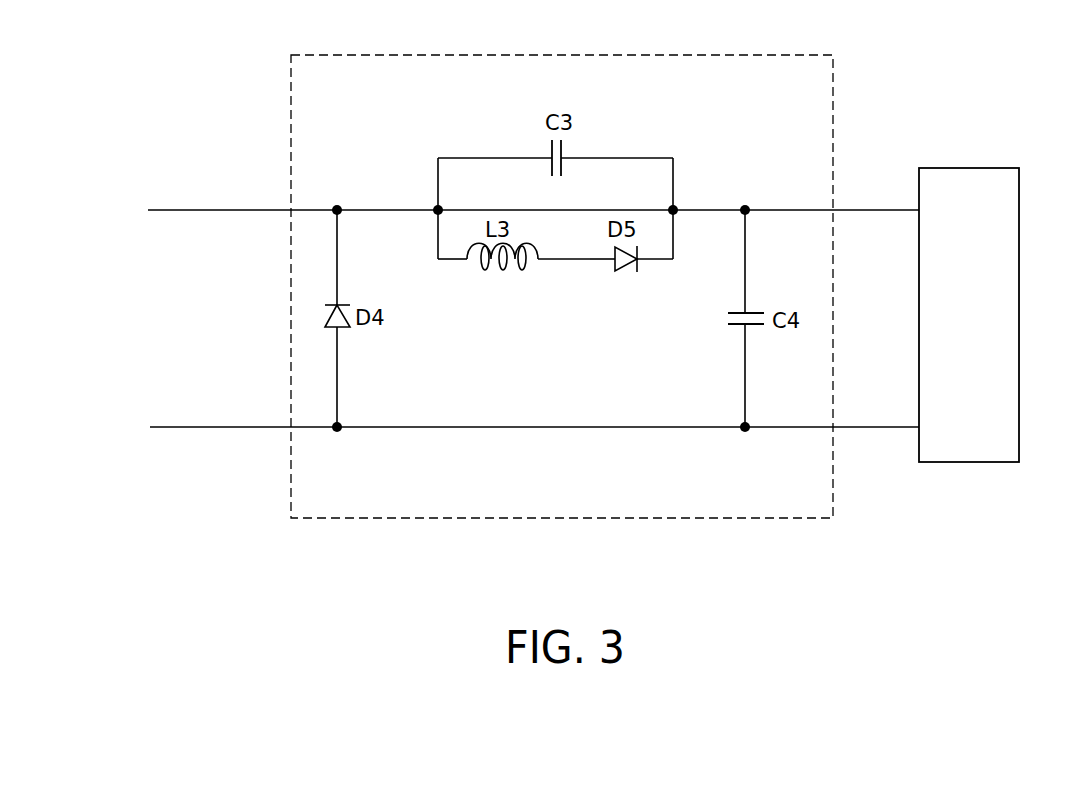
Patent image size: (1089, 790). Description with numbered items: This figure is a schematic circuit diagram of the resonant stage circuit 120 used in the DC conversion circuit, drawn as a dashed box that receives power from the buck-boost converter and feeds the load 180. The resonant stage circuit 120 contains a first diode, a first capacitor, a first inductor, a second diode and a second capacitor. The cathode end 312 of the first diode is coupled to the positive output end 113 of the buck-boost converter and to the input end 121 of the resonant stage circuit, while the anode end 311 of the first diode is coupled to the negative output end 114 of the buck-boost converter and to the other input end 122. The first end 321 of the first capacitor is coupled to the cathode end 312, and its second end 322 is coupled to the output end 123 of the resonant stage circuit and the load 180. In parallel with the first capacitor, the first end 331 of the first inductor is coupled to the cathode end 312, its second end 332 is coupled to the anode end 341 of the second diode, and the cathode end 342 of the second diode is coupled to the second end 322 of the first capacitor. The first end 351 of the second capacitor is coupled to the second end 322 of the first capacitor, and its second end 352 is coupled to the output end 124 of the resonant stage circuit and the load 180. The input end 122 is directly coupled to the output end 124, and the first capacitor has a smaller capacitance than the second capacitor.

The resonant stage circuit 120 is at (700, 52).
The load 180 is at (968, 166).
The output end of the buck-boost converter 113 is at (188, 206).
The output end of the buck-boost converter 114 is at (190, 432).
The input end of the resonant stage circuit 121 is at (258, 206).
The input end of the resonant stage circuit 122 is at (255, 432).
The output end of the resonant stage circuit 123 is at (870, 206).
The output end of the resonant stage circuit 124 is at (867, 432).
The anode end 311 is at (339, 368).
The cathode end 312 is at (339, 272).
The first end 321 is at (512, 156).
The second end 322 is at (599, 156).
The first end 331 is at (452, 262).
The second end 332 is at (552, 262).
The anode end 341 is at (595, 262).
The cathode end 342 is at (660, 262).
The first end 351 is at (747, 288).
The second end 352 is at (747, 367).